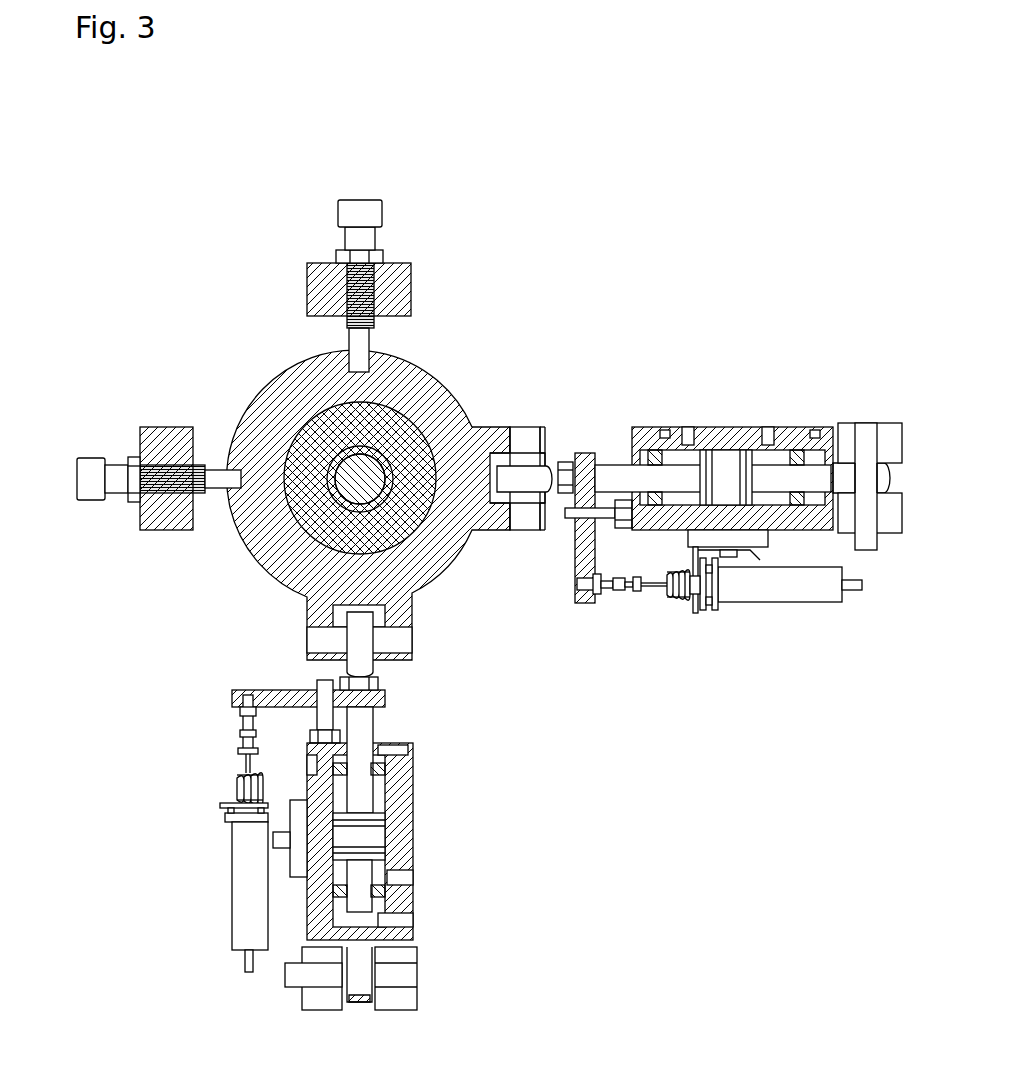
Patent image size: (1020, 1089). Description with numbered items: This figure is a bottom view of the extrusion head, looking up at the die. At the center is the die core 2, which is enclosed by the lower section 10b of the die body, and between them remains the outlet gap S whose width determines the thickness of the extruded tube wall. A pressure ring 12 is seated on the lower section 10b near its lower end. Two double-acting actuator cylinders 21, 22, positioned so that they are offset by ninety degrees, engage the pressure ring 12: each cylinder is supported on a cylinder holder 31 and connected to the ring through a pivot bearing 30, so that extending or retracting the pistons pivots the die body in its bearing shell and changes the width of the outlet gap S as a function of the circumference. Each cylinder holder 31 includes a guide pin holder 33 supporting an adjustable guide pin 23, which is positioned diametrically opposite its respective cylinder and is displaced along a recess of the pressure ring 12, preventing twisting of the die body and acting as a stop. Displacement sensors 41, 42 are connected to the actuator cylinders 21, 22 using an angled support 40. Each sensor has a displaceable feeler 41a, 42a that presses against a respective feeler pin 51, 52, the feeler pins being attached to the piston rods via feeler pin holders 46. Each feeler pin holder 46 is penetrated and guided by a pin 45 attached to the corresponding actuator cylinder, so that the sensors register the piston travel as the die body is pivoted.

The die core 2 is at (340, 492).
The lower section of the die body 10b is at (378, 433).
The pressure ring 12 is at (283, 408).
The actuator cylinder 21 is at (725, 455).
The actuator cylinder 22 is at (417, 845).
The guide pin 23 is at (88, 488).
The pivot bearing 30 is at (523, 475).
The cylinder holder 31 is at (893, 435).
The guide pin holder 33 is at (148, 435).
The angled support 40 is at (750, 550).
The displacement sensor 41 is at (768, 597).
The feeler 41a is at (662, 595).
The displacement sensor 42 is at (243, 850).
The feeler 42a is at (243, 768).
The pin 45 is at (572, 517).
The feeler pin holder 46 is at (587, 452).
The feeler pin 51 is at (617, 600).
The feeler pin 52 is at (243, 720).
The outlet gap S is at (392, 495).